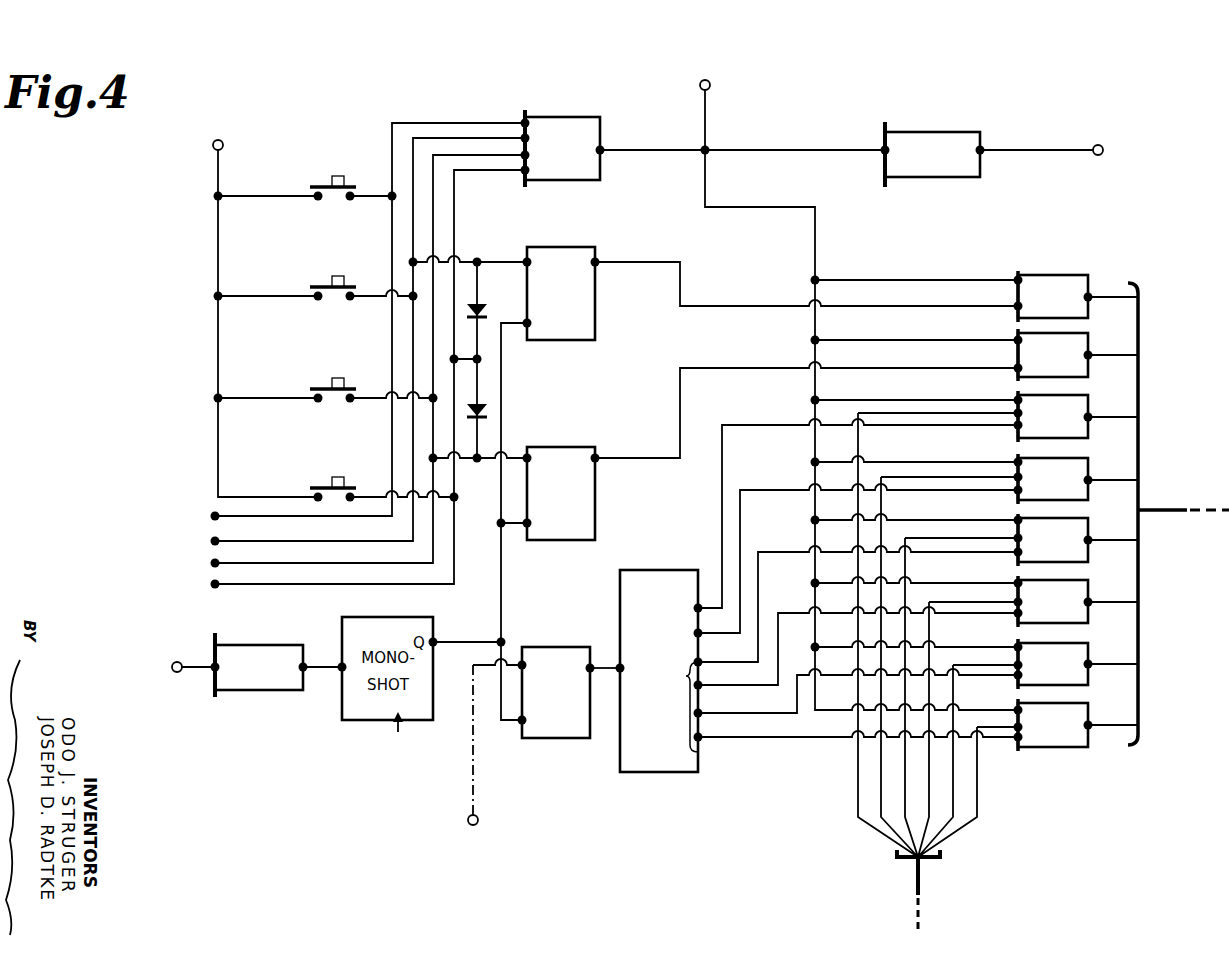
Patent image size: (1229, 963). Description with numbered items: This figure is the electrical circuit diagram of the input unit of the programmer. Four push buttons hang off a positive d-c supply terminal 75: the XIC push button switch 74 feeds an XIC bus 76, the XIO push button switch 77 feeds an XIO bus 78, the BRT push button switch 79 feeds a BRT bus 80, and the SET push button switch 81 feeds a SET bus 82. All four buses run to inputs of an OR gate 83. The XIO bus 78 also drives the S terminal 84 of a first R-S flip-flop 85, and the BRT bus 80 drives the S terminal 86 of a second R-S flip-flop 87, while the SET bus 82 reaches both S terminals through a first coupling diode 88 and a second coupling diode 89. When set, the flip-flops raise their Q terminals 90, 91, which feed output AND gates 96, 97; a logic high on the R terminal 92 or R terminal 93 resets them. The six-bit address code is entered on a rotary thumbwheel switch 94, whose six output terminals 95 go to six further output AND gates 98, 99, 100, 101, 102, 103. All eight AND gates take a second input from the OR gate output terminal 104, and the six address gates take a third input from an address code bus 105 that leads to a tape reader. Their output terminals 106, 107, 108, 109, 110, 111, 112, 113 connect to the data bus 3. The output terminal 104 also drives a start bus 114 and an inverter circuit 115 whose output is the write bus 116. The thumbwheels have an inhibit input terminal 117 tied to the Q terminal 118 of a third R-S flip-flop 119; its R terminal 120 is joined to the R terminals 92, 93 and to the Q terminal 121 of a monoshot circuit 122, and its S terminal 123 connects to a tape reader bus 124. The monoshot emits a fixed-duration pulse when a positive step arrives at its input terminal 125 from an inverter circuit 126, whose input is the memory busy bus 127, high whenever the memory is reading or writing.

The data bus 3 is at (1180, 512).
The XIC push button switch 74 is at (338, 176).
The positive d-c supply terminal 75 is at (223, 140).
The XIC bus 76 is at (392, 122).
The XIO push button switch 77 is at (338, 276).
The XIO bus 78 is at (416, 137).
The BRT push button switch 79 is at (338, 378).
The BRT bus 80 is at (487, 155).
The SET push button switch 81 is at (338, 477).
The SET bus 82 is at (478, 172).
The OR gate 83 is at (575, 117).
The S terminal 84 is at (527, 262).
The first R-S flip-flop 85 is at (561, 293).
The S terminal 86 is at (528, 458).
The second R-S flip-flop 87 is at (561, 493).
The first coupling diode 88 is at (483, 306).
The second coupling diode 89 is at (483, 408).
The Q terminal 90 is at (597, 262).
The Q terminal 91 is at (597, 458).
The R terminal 92 is at (527, 326).
The R terminal 93 is at (526, 526).
The rotary thumbwheel switch 94 is at (659, 671).
The output terminals 95 is at (831, 585).
The output AND gate 96 is at (1063, 275).
The output AND gate 97 is at (1083, 333).
The output AND gate 98 is at (1083, 395).
The output AND gate 99 is at (1083, 458).
The output AND gate 100 is at (1083, 518).
The output AND gate 101 is at (1083, 580).
The output AND gate 102 is at (1083, 643).
The output AND gate 103 is at (1083, 703).
The output terminal 104 is at (612, 150).
The address code bus 105 is at (922, 885).
The output terminal 106 is at (1090, 297).
The output terminal 107 is at (1090, 355).
The output terminal 108 is at (1090, 417).
The output terminal 109 is at (1090, 480).
The output terminal 110 is at (1090, 540).
The output terminal 111 is at (1090, 602).
The output terminal 112 is at (1090, 664).
The output terminal 113 is at (1090, 725).
The start bus 114 is at (710, 86).
The inverter circuit 115 is at (962, 132).
The write bus 116 is at (1100, 142).
The inhibit input terminal 117 is at (621, 666).
The Q terminal 118 is at (591, 666).
The third R-S flip-flop 119 is at (556, 692).
The R terminal 120 is at (523, 723).
The Q terminal 121 is at (436, 641).
The monoshot circuit 122 is at (397, 740).
The S terminal 123 is at (522, 664).
The tape reader bus 124 is at (480, 819).
The input terminal 125 is at (342, 670).
The inverter circuit 126 is at (258, 692).
The memory busy bus 127 is at (175, 674).